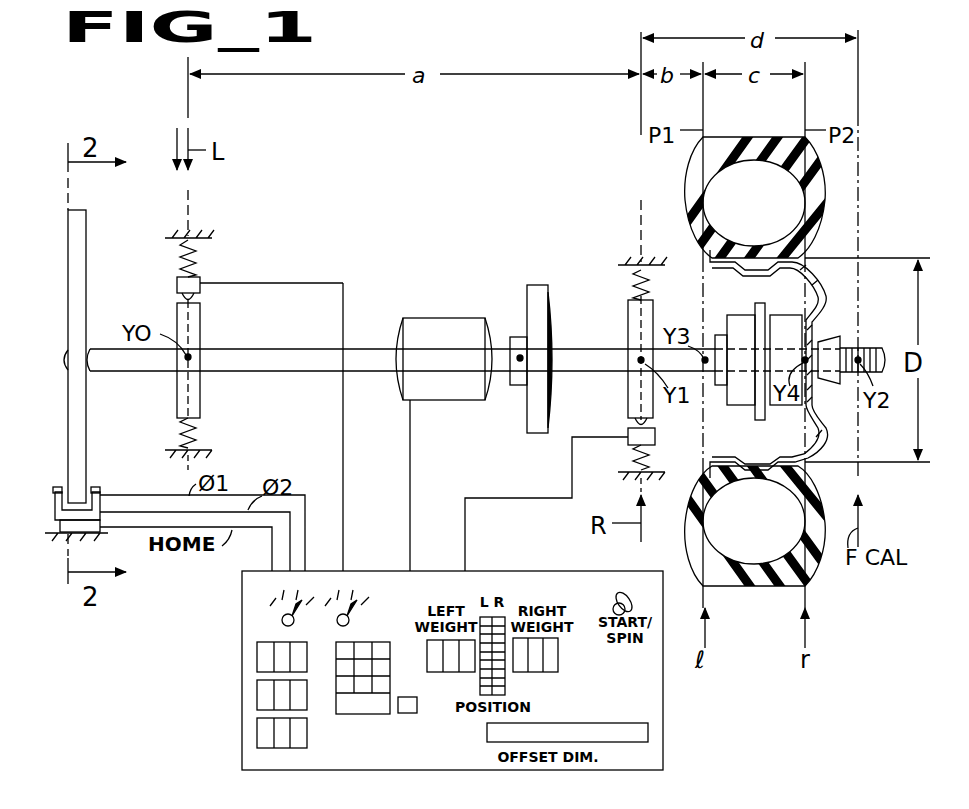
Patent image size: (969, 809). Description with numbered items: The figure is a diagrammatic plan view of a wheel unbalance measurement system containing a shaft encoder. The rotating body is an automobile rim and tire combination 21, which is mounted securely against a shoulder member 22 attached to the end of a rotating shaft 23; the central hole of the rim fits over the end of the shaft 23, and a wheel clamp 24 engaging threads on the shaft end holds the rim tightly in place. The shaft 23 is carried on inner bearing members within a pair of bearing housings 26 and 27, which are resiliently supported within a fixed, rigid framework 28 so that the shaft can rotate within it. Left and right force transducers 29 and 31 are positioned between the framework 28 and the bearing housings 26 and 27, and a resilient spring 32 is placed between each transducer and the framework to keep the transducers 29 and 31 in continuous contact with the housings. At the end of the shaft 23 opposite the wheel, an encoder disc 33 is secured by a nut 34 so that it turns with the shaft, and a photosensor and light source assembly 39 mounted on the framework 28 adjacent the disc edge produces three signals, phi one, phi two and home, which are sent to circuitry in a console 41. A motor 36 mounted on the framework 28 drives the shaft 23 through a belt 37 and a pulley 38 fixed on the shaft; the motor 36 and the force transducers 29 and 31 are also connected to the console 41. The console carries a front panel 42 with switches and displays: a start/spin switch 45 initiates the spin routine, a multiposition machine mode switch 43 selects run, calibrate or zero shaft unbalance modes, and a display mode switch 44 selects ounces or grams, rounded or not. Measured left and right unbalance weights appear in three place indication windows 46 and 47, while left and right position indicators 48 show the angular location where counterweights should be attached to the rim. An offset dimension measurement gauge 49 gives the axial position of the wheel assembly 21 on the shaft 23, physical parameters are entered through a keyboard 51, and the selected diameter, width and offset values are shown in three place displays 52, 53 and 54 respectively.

The rim and tire combination 21 is at (808, 290).
The shoulder member 22 is at (785, 318).
The rotating shaft 23 is at (877, 348).
The wheel clamp 24 is at (817, 347).
The bearing housing 26 is at (177, 396).
The bearing housing 27 is at (628, 321).
The framework 28 is at (206, 241).
The left force transducer 29 is at (177, 286).
The right force transducer 31 is at (656, 432).
The resilient spring 32 is at (181, 256).
The encoder disc 33 is at (86, 216).
The nut 34 is at (64, 366).
The motor 36 is at (434, 401).
The belt 37 is at (538, 285).
The pulley 38 is at (527, 294).
The photosensor and light source assembly 39 is at (56, 497).
The console 41 is at (663, 689).
The front panel 42 is at (638, 713).
The machine mode switch 43 is at (283, 615).
The display mode switch 44 is at (355, 617).
The start/spin switch 45 is at (614, 599).
The left unbalance weight indication window 46 is at (432, 672).
The right unbalance weight indication window 47 is at (532, 672).
The left and right position indicators 48 is at (505, 616).
The offset dimension measurement gauge 49 is at (645, 733).
The keyboard 51 is at (346, 714).
The three place display 52 is at (258, 657).
The three place display 53 is at (258, 695).
The three place display 54 is at (258, 733).